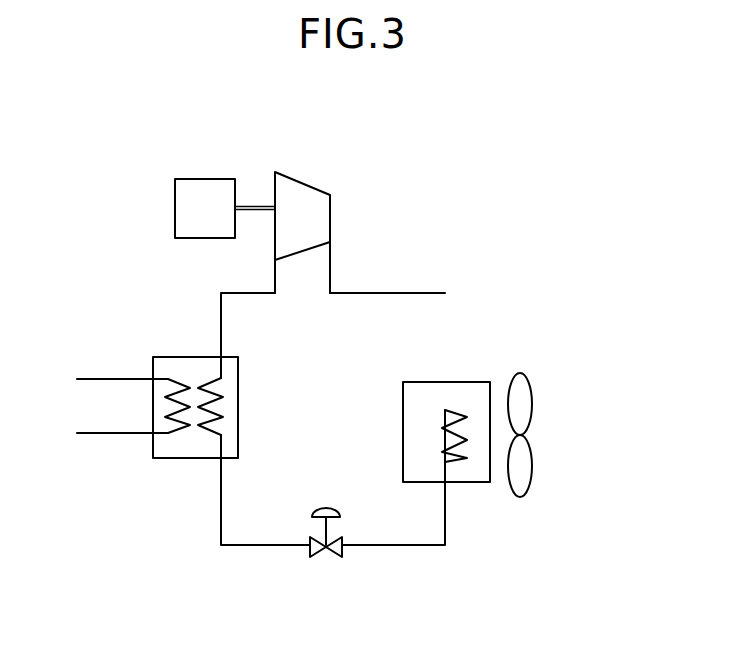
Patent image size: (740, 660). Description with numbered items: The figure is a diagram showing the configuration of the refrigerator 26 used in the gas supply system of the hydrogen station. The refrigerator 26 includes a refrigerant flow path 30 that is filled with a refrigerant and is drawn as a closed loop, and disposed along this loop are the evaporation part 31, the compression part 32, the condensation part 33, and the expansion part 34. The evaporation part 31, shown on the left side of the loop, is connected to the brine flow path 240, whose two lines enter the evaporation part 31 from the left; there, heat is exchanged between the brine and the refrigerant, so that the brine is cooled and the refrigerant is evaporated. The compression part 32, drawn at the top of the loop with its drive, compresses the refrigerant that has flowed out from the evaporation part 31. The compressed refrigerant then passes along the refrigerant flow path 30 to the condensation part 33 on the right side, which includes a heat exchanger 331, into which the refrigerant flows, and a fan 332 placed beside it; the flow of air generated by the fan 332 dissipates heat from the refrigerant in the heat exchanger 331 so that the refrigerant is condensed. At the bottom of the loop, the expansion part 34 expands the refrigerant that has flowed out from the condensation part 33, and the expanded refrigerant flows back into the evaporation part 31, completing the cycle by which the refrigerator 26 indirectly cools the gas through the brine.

The refrigerator 26 is at (138, 190).
The refrigerant flow path 30 is at (387, 293).
The evaporation part 31 is at (187, 357).
The compression part 32 is at (287, 158).
The condensation part 33 is at (540, 307).
The expansion part 34 is at (330, 562).
The brine flow path 240 is at (111, 433).
The heat exchanger 331 is at (465, 382).
The fan 332 is at (532, 413).